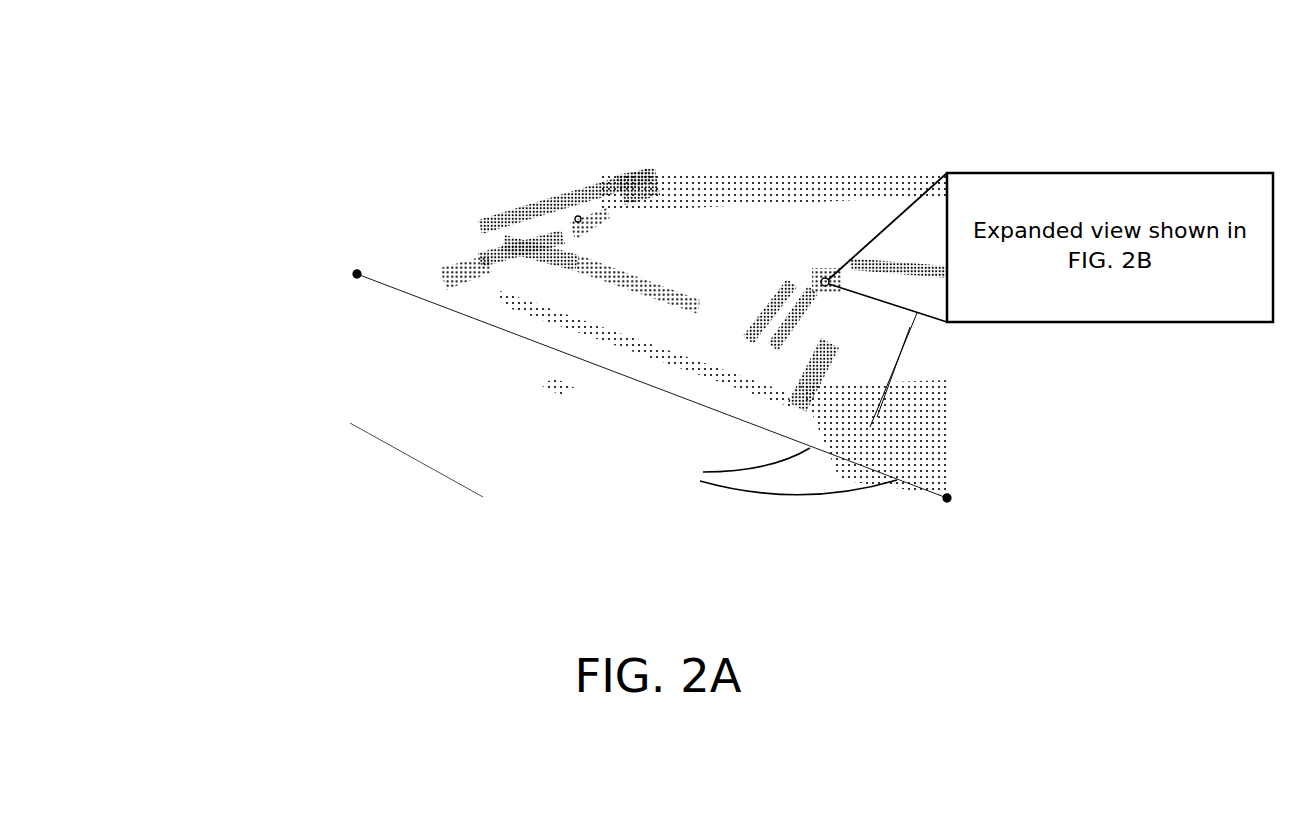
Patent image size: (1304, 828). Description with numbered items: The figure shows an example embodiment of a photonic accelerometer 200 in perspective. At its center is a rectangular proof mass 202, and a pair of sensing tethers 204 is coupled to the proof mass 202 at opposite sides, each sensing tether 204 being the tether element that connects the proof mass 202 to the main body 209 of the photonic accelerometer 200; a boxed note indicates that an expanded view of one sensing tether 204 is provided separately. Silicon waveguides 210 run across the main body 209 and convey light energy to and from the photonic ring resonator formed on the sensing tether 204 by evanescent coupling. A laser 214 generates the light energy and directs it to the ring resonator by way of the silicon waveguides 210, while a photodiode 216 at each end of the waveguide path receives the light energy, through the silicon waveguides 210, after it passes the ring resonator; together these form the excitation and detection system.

The photonic accelerometer 200 is at (458, 622).
The proof mass 202 is at (573, 262).
The sensing tether 204 is at (822, 279).
The main body 209 is at (497, 414).
The silicon waveguide 210 is at (427, 300).
The laser 214 is at (547, 390).
The photodiode 216 is at (942, 503).